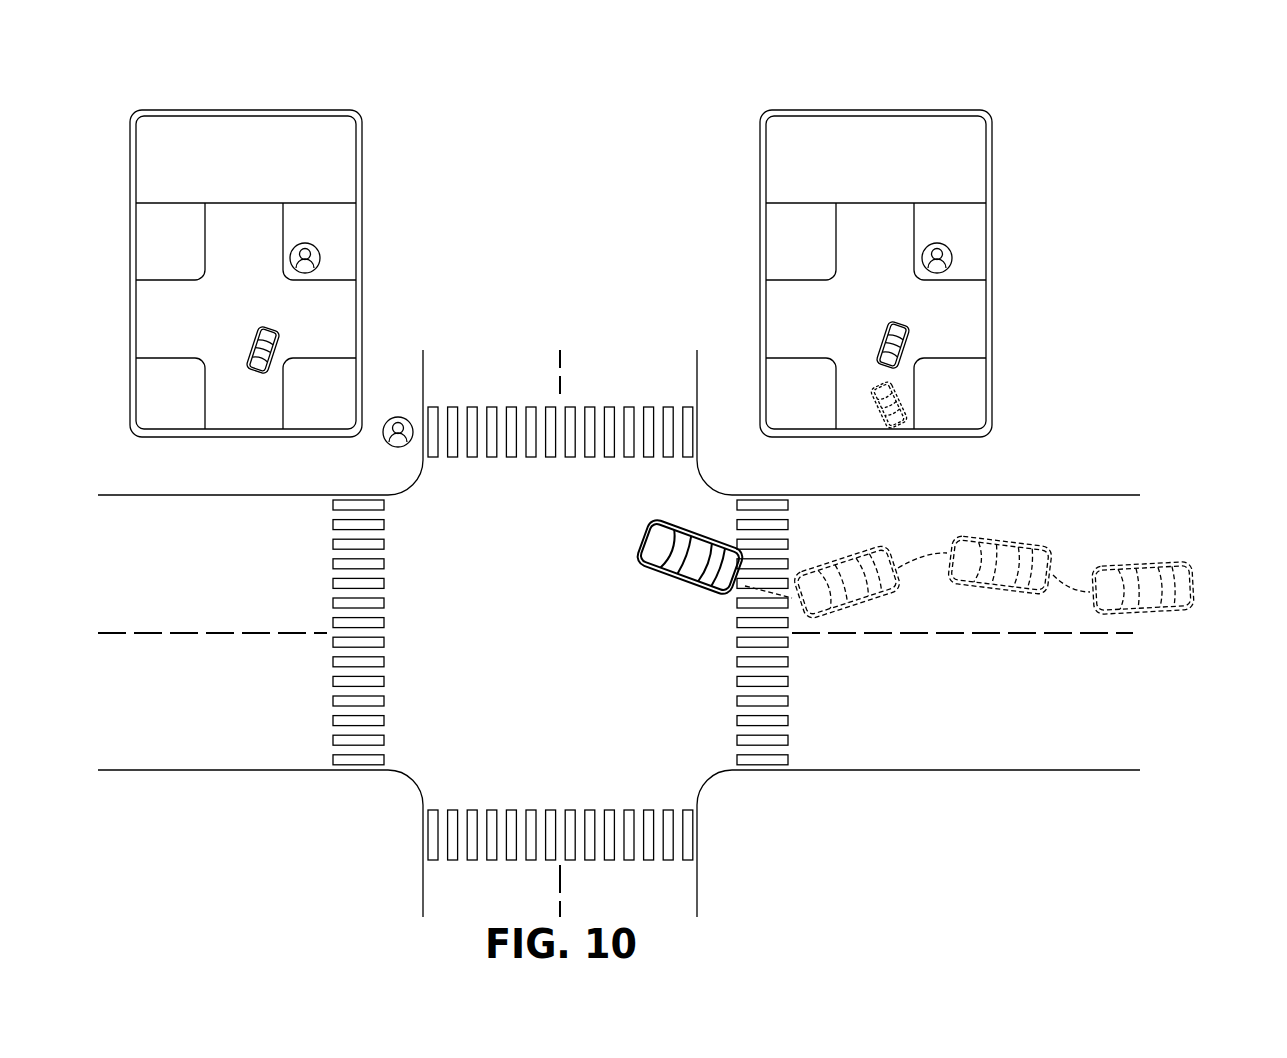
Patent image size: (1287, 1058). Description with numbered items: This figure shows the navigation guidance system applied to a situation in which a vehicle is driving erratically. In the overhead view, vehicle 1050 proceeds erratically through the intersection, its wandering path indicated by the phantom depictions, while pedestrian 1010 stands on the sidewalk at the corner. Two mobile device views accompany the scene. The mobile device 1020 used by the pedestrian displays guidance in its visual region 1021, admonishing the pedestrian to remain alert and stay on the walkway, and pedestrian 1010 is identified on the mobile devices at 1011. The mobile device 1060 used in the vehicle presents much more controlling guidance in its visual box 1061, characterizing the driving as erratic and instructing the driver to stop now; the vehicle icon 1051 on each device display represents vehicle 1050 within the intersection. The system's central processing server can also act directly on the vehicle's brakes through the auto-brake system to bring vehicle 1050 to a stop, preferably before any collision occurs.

The pedestrian 1010 is at (380, 442).
The pedestrian identification 1011 is at (321, 258).
The mobile device 1020 is at (247, 110).
The visual region 1021 is at (318, 128).
The vehicle 1050 is at (640, 536).
The vehicle icon 1051 is at (249, 345).
The mobile device 1060 is at (876, 110).
The visual box 1061 is at (795, 130).